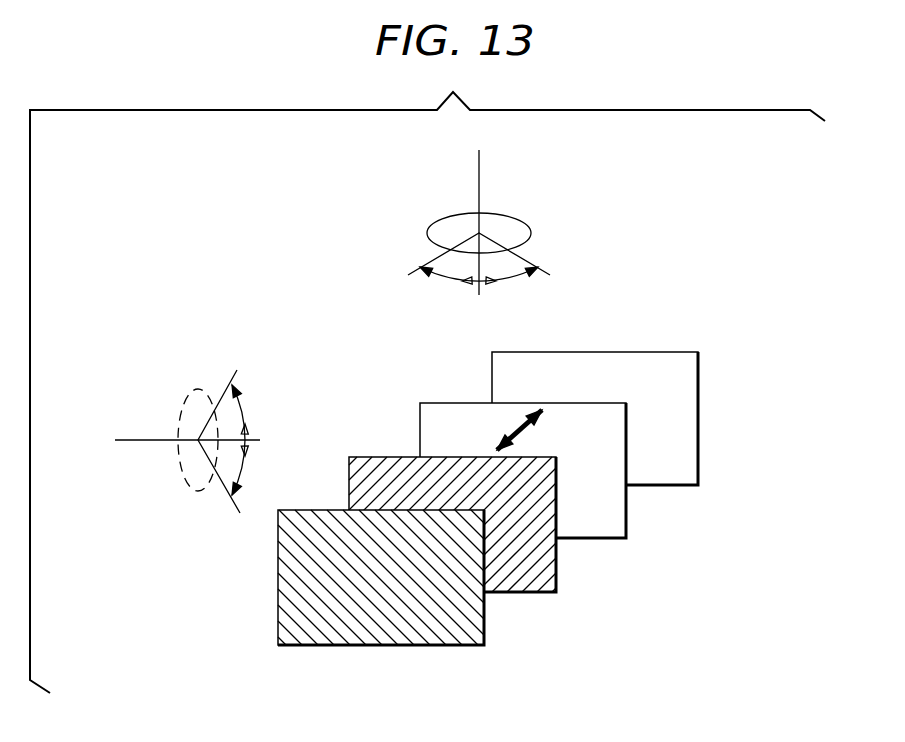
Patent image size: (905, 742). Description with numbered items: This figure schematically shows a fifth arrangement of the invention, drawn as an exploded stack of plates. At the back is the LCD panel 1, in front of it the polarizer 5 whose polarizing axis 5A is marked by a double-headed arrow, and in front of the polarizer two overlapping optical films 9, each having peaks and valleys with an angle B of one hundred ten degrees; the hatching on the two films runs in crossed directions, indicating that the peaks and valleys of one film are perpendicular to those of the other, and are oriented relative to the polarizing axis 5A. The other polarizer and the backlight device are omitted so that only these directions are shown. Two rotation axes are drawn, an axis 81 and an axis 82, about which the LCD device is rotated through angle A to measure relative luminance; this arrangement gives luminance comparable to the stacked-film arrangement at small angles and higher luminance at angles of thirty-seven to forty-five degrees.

The LCD panel 1 is at (698, 466).
The polarizer 5 is at (627, 515).
The polarizing axis 5A is at (515, 425).
The optical film 9 is at (556, 570).
The axis 81 is at (140, 440).
The axis 82 is at (479, 183).